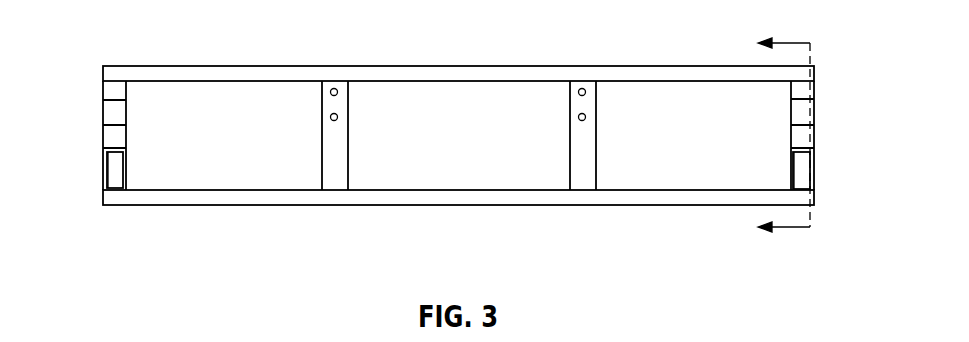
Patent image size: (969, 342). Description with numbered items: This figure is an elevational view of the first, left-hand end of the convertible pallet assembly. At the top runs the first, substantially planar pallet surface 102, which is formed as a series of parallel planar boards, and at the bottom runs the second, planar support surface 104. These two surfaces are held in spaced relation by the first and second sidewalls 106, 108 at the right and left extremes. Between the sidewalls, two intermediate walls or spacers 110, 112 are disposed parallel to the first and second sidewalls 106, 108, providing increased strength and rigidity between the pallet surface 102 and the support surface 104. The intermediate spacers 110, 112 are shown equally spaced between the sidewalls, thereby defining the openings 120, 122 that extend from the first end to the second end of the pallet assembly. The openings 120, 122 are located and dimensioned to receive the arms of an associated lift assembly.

The pallet surface 102 is at (501, 75).
The support surface 104 is at (502, 198).
The first sidewall 106 is at (815, 135).
The second sidewall 108 is at (103, 133).
The intermediate wall/spacer 110 is at (582, 175).
The intermediate wall/spacer 112 is at (334, 175).
The opening 120 is at (725, 154).
The opening 122 is at (200, 153).